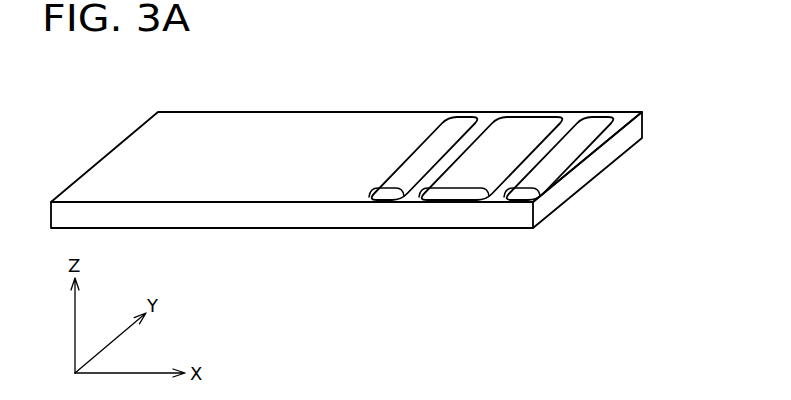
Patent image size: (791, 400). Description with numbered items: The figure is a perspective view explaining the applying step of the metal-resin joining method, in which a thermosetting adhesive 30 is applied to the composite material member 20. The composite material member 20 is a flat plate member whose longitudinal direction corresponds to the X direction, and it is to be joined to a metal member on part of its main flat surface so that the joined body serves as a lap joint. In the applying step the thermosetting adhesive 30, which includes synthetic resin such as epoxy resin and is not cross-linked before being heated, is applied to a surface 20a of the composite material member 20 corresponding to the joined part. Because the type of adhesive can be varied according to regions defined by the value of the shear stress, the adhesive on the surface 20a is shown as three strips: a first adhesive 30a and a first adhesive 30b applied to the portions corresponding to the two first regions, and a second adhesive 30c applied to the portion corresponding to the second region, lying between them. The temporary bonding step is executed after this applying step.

The composite material member 20 is at (283, 112).
The surface of the composite material member 20a is at (410, 196).
The thermosetting adhesive 30 is at (627, 53).
The first adhesive 30a is at (475, 117).
The first adhesive 30b is at (602, 117).
The second adhesive 30c is at (535, 117).